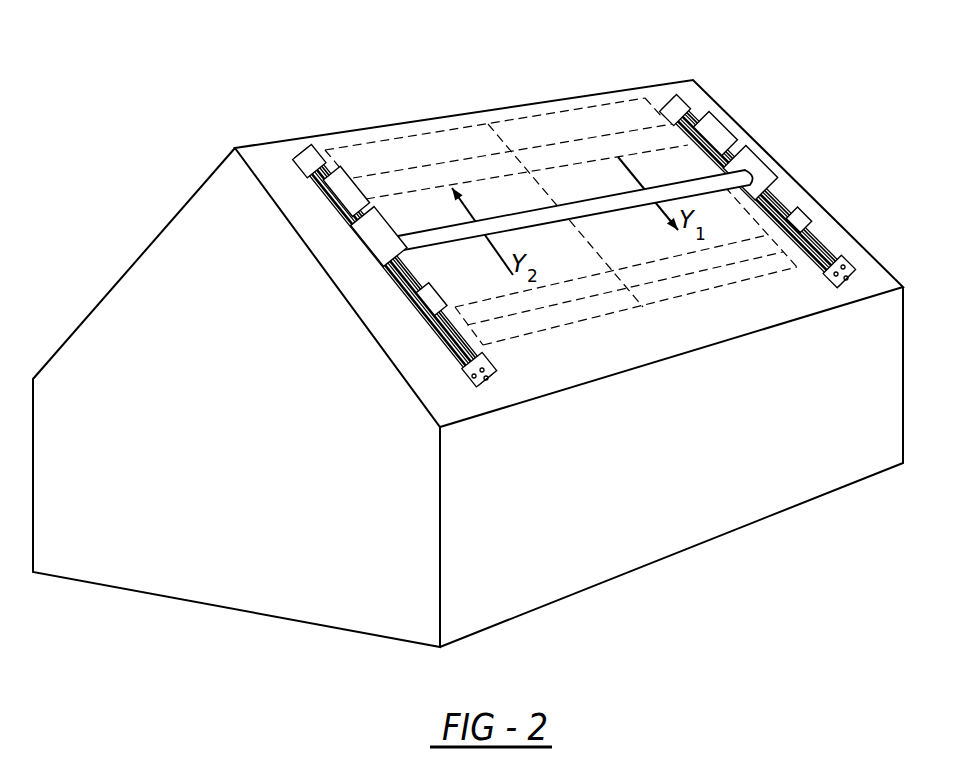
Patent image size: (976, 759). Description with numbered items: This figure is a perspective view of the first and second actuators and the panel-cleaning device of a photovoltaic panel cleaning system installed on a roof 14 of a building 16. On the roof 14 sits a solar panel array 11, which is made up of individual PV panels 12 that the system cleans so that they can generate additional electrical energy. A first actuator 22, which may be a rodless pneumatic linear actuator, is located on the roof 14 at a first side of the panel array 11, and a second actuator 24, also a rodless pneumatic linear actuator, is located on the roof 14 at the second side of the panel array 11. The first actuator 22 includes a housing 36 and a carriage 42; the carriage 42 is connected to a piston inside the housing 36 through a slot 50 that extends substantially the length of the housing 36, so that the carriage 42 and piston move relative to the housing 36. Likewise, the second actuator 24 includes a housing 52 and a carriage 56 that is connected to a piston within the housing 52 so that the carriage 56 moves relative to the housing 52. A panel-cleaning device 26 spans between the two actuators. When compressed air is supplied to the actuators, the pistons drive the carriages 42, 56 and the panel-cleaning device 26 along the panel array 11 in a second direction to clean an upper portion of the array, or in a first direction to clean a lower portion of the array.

The solar panel array 11 is at (569, 229).
The PV panels 12 is at (413, 157).
The roof 14 is at (263, 157).
The building 16 is at (904, 441).
The first actuator 22 is at (572, 203).
The second actuator 24 is at (797, 193).
The panel-cleaning device 26 is at (703, 118).
The housing 36 is at (313, 156).
The carriage 42 is at (372, 248).
The slot 50 is at (693, 182).
The housing 52 is at (840, 247).
The carriage 56 is at (766, 171).